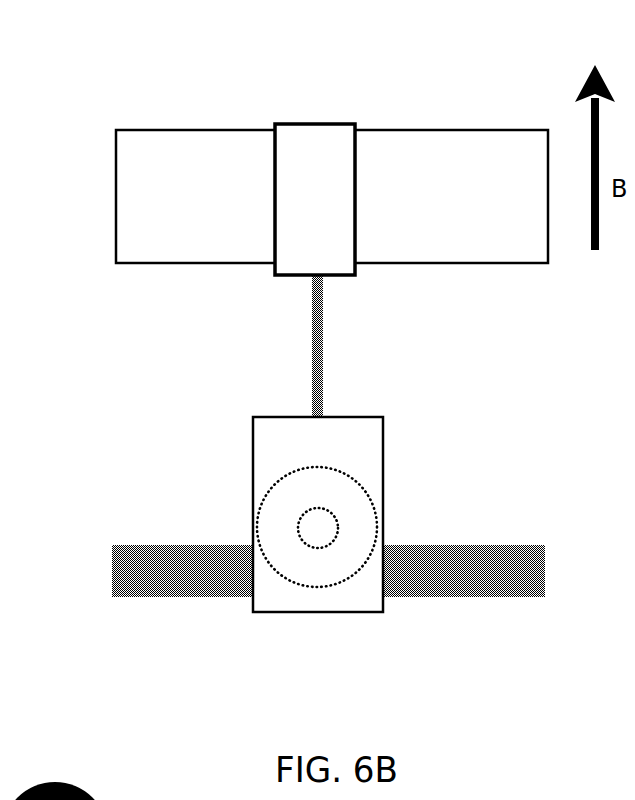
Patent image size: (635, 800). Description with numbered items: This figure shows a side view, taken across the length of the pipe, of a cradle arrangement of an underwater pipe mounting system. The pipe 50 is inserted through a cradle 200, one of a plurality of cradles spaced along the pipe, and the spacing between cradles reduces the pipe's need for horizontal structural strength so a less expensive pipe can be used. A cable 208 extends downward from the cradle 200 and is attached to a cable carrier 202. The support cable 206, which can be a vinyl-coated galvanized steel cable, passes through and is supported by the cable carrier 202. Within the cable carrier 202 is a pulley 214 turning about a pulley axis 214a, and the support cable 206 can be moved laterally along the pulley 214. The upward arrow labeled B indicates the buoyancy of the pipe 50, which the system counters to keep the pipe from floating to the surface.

The pipe 50 is at (112, 214).
The cradle 200 is at (319, 125).
The cable carrier 202 is at (387, 418).
The support cable 206 is at (175, 547).
The cable 208 is at (325, 325).
The pulley 214 is at (383, 515).
The pulley axis 214a is at (320, 553).